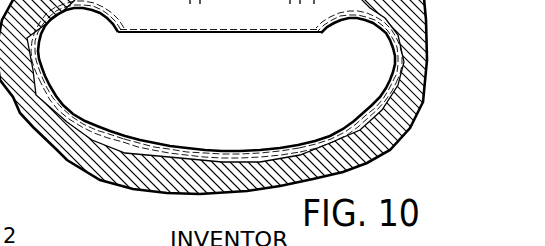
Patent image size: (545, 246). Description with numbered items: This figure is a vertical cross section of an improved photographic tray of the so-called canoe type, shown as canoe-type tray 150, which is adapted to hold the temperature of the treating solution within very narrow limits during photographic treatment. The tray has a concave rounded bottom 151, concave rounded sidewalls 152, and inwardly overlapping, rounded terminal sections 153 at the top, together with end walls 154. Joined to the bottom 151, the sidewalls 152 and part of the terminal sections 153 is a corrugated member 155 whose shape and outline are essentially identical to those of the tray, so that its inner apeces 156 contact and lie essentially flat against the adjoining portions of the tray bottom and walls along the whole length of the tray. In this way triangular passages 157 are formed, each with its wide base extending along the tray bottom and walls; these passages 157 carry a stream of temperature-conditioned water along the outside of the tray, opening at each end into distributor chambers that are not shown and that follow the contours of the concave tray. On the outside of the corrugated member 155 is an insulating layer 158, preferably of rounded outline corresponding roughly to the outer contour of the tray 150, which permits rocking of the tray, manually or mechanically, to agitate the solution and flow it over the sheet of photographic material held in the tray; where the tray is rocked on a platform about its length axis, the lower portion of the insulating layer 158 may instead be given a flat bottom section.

The canoe-type tray 150 is at (121, 19).
The concave rounded bottom 151 is at (200, 143).
The concave rounded sidewalls 152 is at (386, 56).
The inwardly overlapping rounded terminal sections 153 is at (80, 20).
The end walls 154 is at (223, 87).
The corrugated member 155 is at (125, 160).
The inner apeces 156 is at (270, 143).
The triangular passages 157 is at (89, 119).
The insulating layer 158 is at (50, 122).